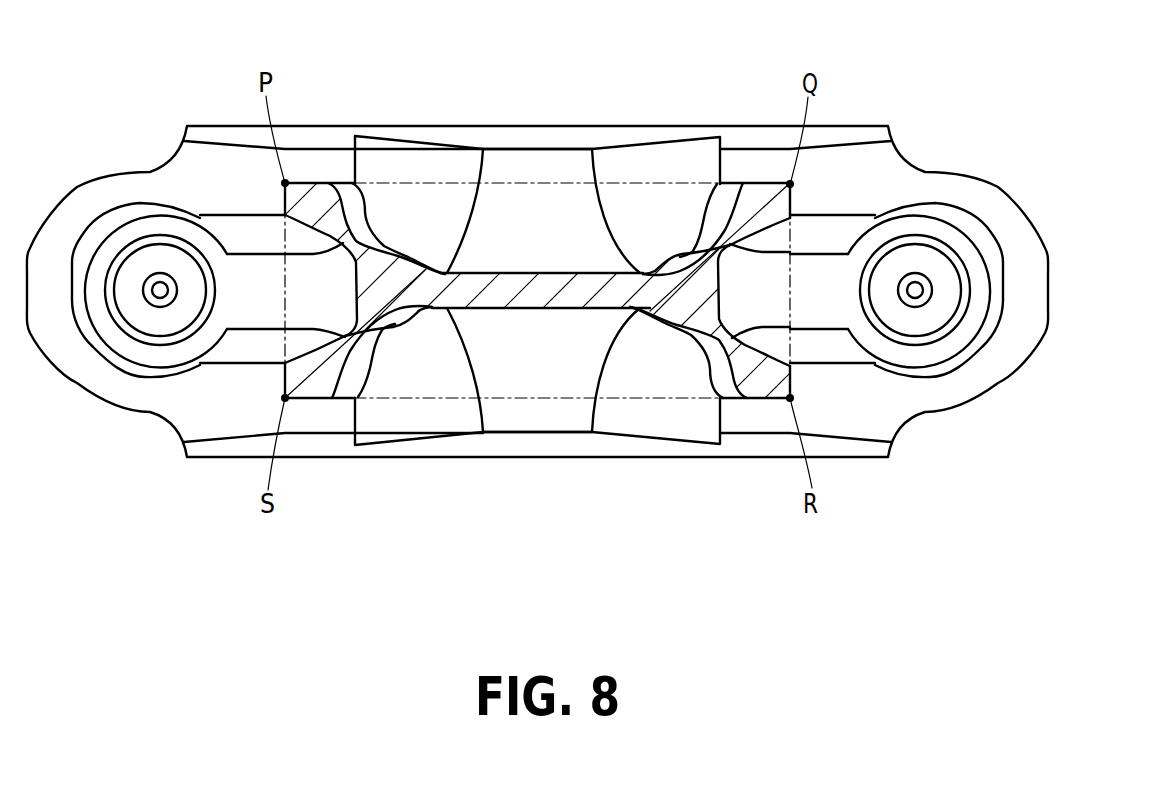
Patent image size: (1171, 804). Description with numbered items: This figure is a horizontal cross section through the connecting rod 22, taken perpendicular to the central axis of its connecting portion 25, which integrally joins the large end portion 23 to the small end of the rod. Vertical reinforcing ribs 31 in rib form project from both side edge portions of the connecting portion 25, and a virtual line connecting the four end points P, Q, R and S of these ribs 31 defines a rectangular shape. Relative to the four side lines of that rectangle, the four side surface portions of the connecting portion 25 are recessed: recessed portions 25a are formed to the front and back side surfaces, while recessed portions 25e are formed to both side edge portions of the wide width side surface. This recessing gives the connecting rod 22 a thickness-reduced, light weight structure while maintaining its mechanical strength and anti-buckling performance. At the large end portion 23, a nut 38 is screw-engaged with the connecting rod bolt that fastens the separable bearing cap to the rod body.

The connecting rod 22 is at (1035, 194).
The large end portion 23 is at (902, 157).
The connecting portion 25 is at (588, 276).
The recessed portion 25a is at (558, 211).
The recessed portion 25e is at (336, 300).
The vertical reinforcing rib 31 is at (308, 183).
The nut 38 is at (153, 248).